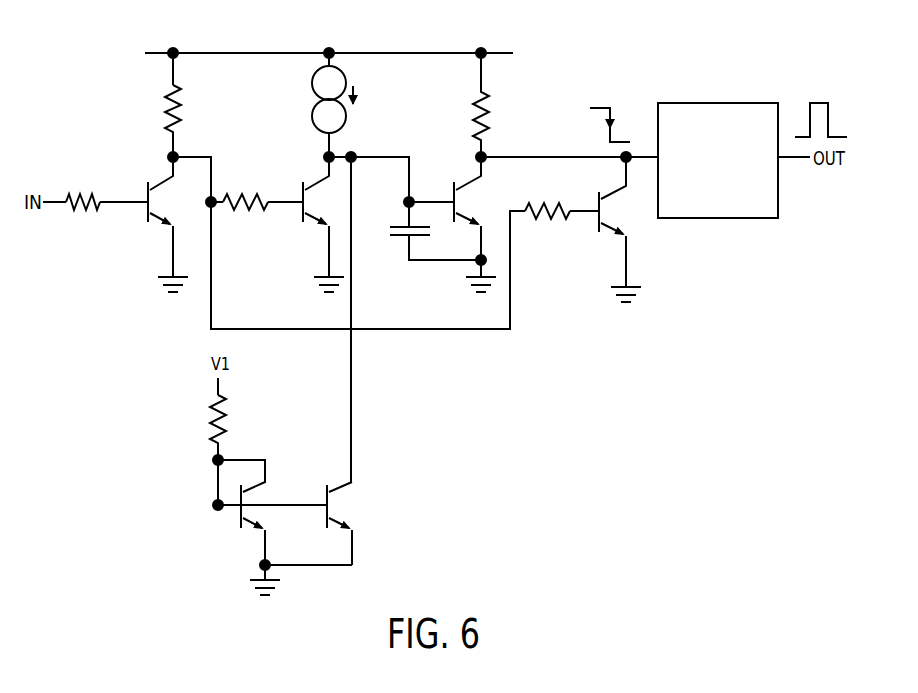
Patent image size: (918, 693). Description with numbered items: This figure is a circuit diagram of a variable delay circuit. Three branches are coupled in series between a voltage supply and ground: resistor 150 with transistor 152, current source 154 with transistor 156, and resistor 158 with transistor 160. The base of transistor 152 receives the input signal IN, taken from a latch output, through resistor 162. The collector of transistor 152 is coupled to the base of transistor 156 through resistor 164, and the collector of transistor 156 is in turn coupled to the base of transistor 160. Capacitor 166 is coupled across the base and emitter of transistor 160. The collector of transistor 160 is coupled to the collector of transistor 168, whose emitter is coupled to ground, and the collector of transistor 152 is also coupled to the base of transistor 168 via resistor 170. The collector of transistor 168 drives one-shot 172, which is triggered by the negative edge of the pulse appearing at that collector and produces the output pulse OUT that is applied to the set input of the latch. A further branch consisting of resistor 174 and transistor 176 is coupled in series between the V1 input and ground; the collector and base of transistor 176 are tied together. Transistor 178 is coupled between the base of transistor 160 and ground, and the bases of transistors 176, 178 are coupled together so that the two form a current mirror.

The resistor 150 is at (188, 108).
The transistor 152 is at (140, 217).
The current source 154 is at (312, 82).
The transistor 156 is at (303, 225).
The resistor 158 is at (490, 112).
The transistor 160 is at (478, 193).
The resistor 162 is at (77, 188).
The resistor 164 is at (243, 188).
The capacitor 166 is at (403, 247).
The transistor 168 is at (632, 225).
The resistor 170 is at (550, 228).
The one-shot 172 is at (712, 103).
The resistor 174 is at (205, 423).
The transistor 176 is at (240, 535).
The transistor 178 is at (340, 500).